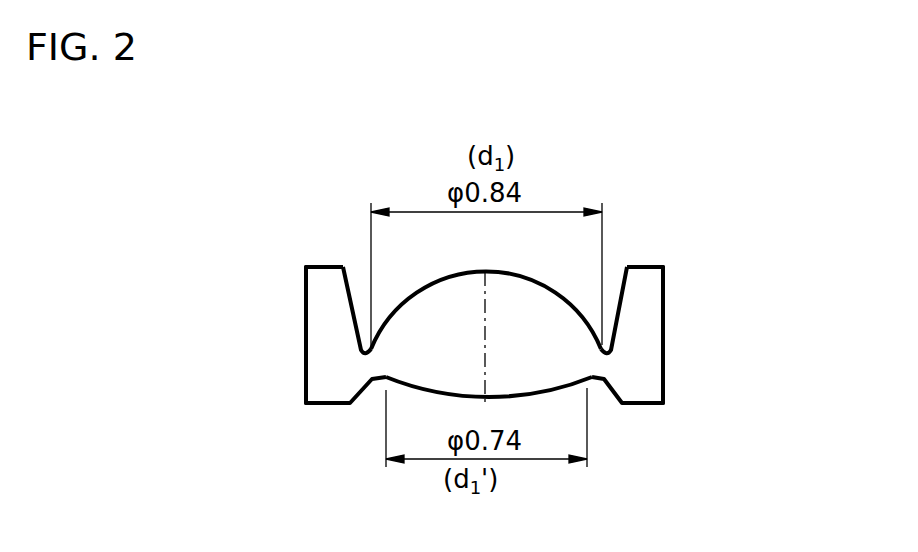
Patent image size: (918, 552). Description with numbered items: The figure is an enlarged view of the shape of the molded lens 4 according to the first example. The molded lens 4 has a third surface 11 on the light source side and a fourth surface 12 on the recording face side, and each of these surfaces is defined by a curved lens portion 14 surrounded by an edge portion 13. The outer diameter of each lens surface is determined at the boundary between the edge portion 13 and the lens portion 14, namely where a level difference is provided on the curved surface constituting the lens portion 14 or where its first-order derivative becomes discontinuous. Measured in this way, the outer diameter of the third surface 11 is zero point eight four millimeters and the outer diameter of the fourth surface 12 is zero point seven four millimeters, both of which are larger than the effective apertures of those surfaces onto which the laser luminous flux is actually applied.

The molded lens 4 is at (663, 323).
The third surface 11 is at (547, 285).
The fourth surface 12 is at (545, 395).
The edge portion 13 is at (325, 393).
The lens portion 14 is at (430, 298).